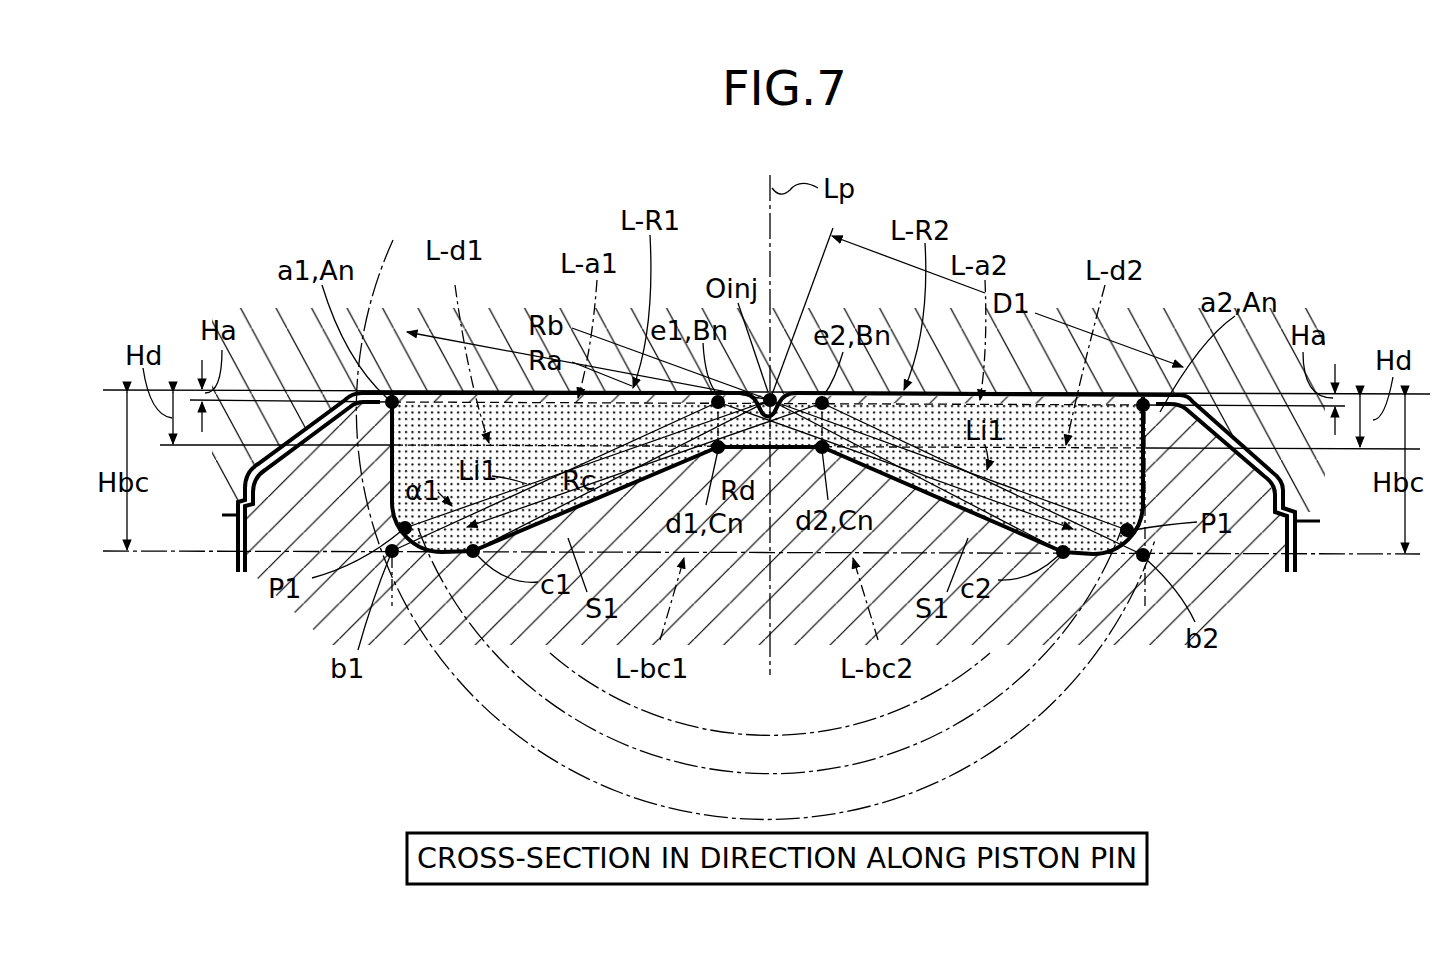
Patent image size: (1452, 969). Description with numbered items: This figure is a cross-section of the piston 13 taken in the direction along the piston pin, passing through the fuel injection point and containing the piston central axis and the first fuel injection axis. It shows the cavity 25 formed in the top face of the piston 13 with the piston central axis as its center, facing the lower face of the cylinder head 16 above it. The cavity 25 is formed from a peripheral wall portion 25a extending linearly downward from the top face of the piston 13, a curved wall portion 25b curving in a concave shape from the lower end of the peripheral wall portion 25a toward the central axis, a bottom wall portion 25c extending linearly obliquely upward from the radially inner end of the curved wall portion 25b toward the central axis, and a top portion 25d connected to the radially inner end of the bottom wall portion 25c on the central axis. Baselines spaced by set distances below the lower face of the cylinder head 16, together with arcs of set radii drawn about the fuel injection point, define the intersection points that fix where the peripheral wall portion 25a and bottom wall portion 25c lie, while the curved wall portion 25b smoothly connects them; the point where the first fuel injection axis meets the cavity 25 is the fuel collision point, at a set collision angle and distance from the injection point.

The piston 13 is at (1256, 537).
The cylinder head 16 is at (1147, 340).
The cavity 25 is at (1085, 496).
The peripheral wall portion 25a is at (390, 472).
The curved wall portion 25b is at (446, 556).
The bottom wall portion 25c is at (628, 480).
The top portion 25d is at (832, 414).